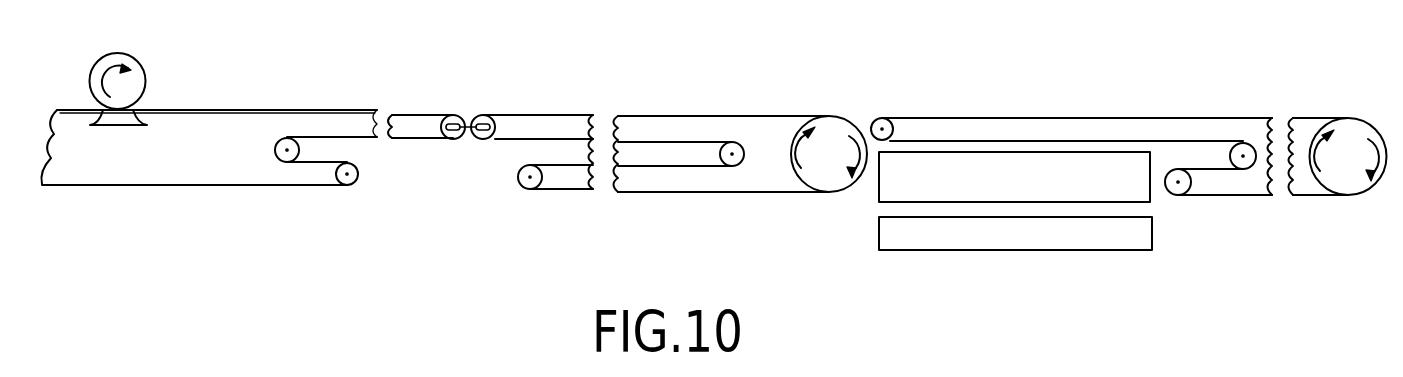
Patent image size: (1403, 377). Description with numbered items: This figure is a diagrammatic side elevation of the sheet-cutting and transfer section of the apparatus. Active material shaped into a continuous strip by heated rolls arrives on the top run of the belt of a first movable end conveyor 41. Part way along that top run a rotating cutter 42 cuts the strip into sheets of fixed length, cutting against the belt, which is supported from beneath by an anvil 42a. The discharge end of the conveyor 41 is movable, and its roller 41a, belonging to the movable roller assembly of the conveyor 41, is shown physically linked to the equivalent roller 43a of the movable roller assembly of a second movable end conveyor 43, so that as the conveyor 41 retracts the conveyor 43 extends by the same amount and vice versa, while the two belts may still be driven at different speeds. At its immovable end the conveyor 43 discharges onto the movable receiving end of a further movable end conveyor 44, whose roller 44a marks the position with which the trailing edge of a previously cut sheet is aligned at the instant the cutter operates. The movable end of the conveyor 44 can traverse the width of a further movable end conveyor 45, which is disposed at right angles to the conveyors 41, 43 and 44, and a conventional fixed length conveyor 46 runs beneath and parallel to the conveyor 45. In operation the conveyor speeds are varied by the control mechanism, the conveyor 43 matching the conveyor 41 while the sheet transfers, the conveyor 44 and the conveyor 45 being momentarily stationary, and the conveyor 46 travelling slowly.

The first movable end conveyor 41 is at (183, 106).
The roller of the movable roller assembly of conveyor 41 41a is at (442, 115).
The rotating cutter 42 is at (123, 60).
The anvil 42a is at (117, 118).
The second movable end conveyor 43 is at (641, 113).
The roller of the movable roller assembly of conveyor 43 43a is at (483, 140).
The further movable end conveyor 44 is at (1045, 117).
The roller of conveyor 44 44a is at (884, 120).
The further movable end conveyor 45 is at (1107, 180).
The conventional fixed length conveyor 46 is at (1107, 233).